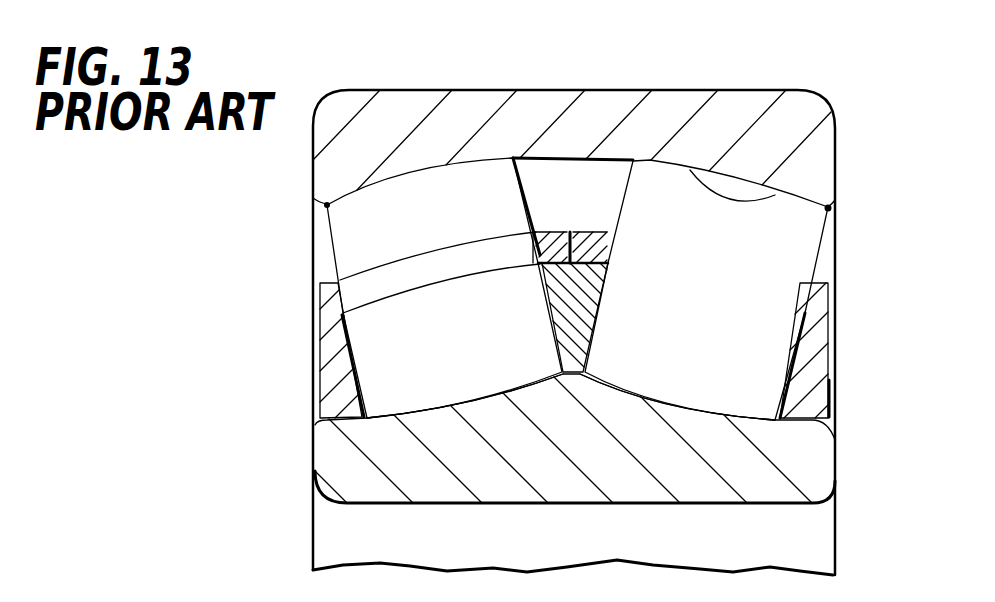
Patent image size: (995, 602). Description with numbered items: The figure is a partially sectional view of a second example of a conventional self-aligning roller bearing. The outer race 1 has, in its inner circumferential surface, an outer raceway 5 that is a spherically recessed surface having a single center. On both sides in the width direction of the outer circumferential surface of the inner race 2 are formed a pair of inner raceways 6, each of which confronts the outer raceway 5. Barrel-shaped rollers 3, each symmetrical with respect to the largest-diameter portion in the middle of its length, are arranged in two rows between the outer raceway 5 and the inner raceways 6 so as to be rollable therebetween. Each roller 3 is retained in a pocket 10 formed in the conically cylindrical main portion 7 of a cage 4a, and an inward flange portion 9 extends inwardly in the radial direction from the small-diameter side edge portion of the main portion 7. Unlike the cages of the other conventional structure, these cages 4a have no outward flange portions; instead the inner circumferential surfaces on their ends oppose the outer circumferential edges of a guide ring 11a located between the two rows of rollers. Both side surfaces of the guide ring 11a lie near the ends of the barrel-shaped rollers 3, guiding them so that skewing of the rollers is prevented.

The outer race 1 is at (818, 143).
The inner race 2 is at (787, 483).
The barrel-shaped roller 3 is at (340, 217).
The cage 4a is at (272, 312).
The outer raceway 5 is at (765, 195).
The inner raceway 6 is at (437, 407).
The main portion 7 is at (357, 264).
The inward flange portion 9 is at (328, 362).
The pocket 10 is at (548, 265).
The guide ring 11a is at (585, 328).